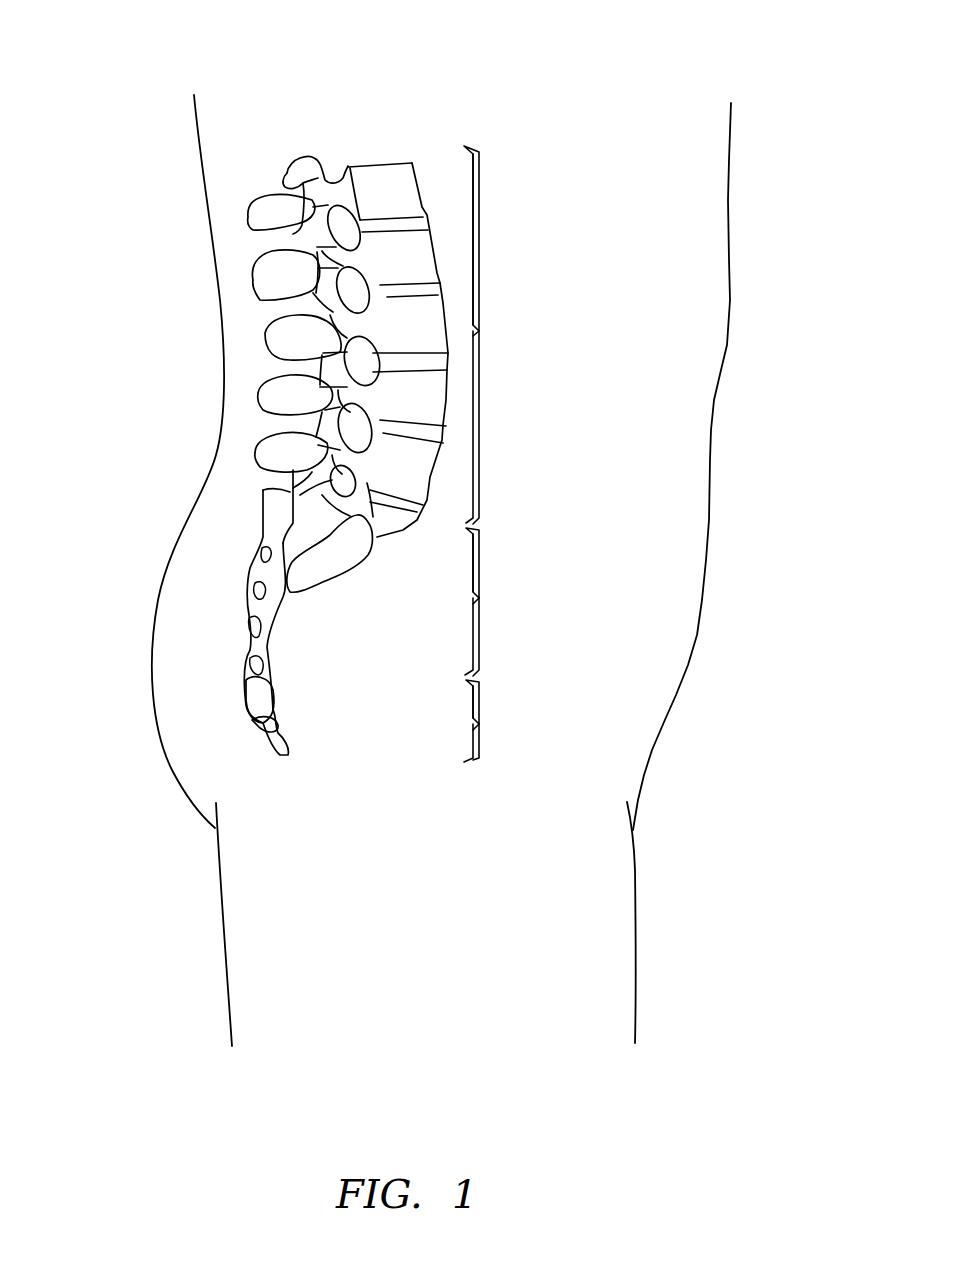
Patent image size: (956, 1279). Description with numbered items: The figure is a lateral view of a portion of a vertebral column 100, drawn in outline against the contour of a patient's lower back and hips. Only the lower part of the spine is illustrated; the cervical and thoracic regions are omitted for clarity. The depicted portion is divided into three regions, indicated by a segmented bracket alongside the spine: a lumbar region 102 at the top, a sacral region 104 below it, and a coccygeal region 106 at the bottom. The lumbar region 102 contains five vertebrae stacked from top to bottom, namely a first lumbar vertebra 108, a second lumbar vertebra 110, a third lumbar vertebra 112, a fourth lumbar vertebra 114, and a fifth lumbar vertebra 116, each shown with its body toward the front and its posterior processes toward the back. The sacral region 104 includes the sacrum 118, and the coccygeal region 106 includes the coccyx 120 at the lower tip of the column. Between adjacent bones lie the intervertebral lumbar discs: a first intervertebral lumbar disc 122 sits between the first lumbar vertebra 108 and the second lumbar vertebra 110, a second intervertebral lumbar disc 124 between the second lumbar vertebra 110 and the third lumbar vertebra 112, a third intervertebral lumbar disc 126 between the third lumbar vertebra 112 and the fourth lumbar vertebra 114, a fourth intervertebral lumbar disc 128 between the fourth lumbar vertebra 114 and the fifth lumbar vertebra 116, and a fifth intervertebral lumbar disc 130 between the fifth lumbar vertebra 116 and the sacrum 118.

The vertebral column 100 is at (724, 40).
The lumbar region 102 is at (481, 331).
The sacral region 104 is at (481, 597).
The coccygeal region 106 is at (481, 722).
The first lumbar vertebra 108 is at (358, 188).
The second lumbar vertebra 110 is at (362, 258).
The third lumbar vertebra 112 is at (392, 337).
The fourth lumbar vertebra 114 is at (385, 392).
The fifth lumbar vertebra 116 is at (378, 457).
The sacrum 118 is at (293, 533).
The coccyx 120 is at (260, 690).
The first intervertebral lumbar disc 122 is at (362, 224).
The second intervertebral lumbar disc 124 is at (372, 312).
The third intervertebral lumbar disc 126 is at (390, 363).
The fourth intervertebral lumbar disc 128 is at (387, 427).
The fifth intervertebral lumbar disc 130 is at (387, 498).